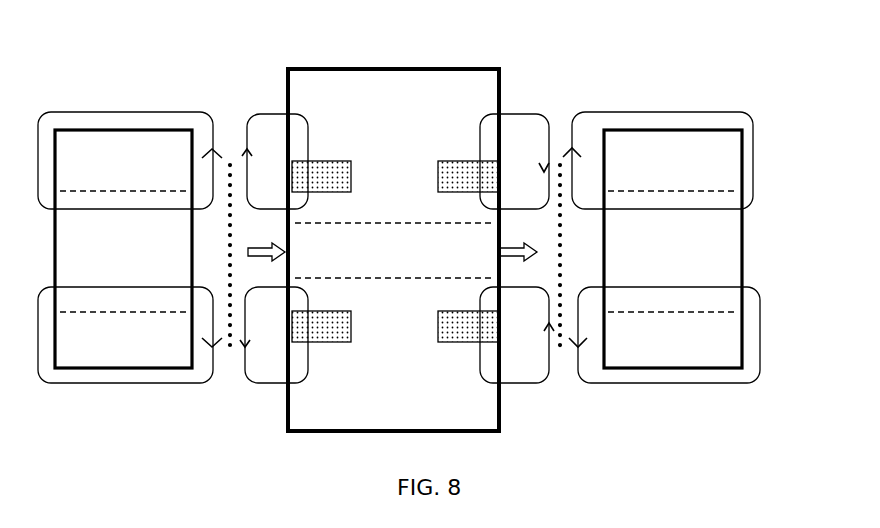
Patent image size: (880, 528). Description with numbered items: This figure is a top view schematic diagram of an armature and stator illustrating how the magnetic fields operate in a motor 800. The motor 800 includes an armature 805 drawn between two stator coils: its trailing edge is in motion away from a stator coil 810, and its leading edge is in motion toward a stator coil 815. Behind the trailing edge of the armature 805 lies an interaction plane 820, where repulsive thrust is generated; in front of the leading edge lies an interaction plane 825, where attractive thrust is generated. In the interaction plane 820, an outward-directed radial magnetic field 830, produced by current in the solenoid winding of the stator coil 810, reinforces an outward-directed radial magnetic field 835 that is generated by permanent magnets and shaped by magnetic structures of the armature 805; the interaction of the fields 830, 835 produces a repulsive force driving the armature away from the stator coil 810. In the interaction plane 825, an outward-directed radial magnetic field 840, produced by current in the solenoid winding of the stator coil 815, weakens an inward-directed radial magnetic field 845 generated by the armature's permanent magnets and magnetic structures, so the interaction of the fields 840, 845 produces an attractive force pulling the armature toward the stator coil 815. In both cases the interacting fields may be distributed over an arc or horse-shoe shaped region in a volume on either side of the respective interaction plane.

The motor 800 is at (691, 38).
The armature 805 is at (478, 68).
The stator coil 810 is at (149, 130).
The stator coil 815 is at (677, 125).
The interaction plane 820 is at (236, 140).
The interaction plane 825 is at (565, 147).
The outward-directed radial magnetic field 830 is at (74, 112).
The outward-directed radial magnetic field 835 is at (305, 104).
The outward-directed radial magnetic field 840 is at (740, 104).
The inward-directed radial magnetic field 845 is at (480, 118).